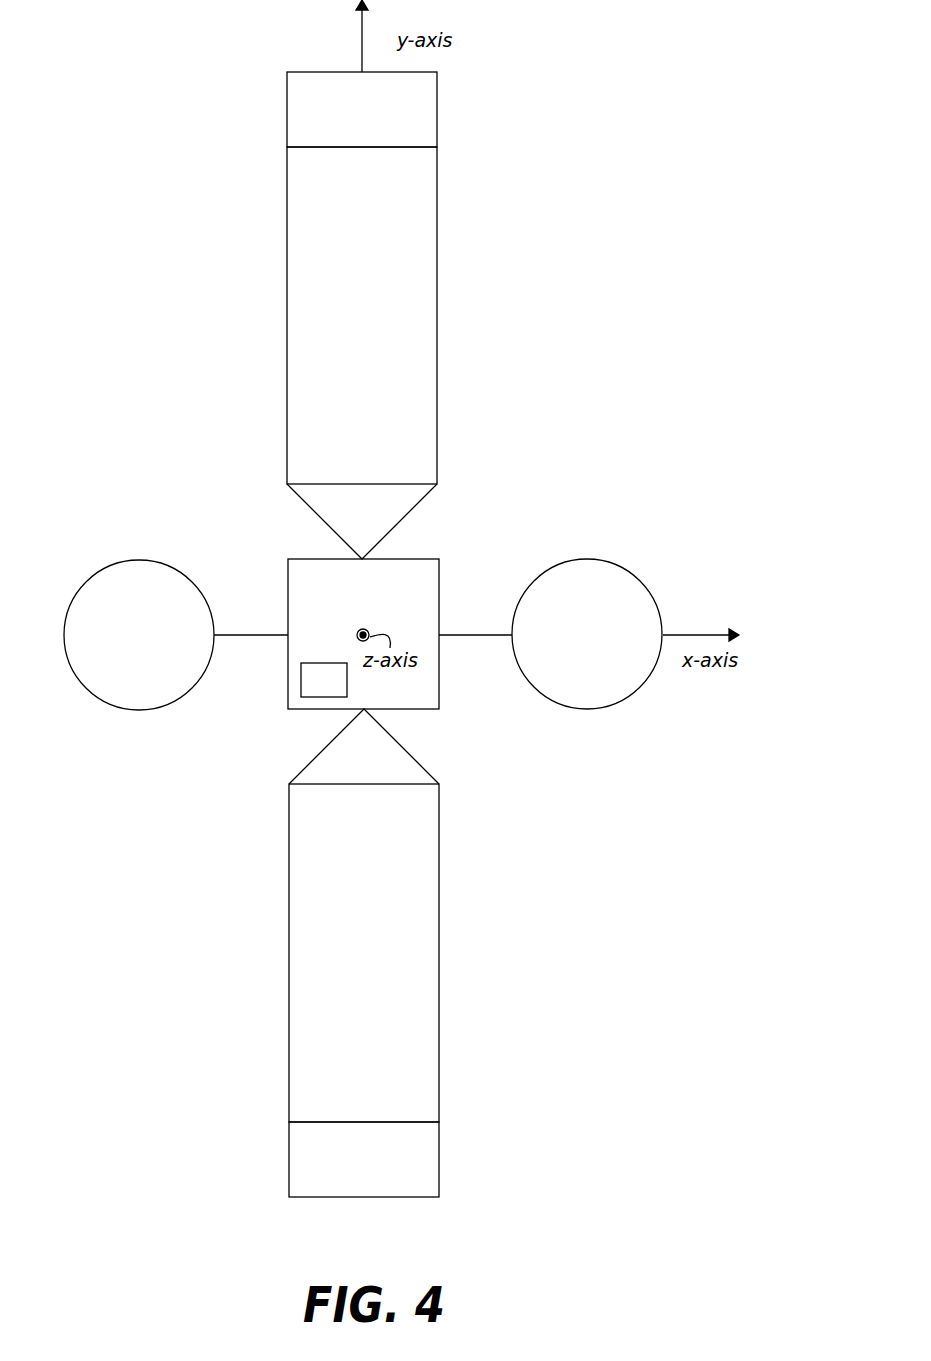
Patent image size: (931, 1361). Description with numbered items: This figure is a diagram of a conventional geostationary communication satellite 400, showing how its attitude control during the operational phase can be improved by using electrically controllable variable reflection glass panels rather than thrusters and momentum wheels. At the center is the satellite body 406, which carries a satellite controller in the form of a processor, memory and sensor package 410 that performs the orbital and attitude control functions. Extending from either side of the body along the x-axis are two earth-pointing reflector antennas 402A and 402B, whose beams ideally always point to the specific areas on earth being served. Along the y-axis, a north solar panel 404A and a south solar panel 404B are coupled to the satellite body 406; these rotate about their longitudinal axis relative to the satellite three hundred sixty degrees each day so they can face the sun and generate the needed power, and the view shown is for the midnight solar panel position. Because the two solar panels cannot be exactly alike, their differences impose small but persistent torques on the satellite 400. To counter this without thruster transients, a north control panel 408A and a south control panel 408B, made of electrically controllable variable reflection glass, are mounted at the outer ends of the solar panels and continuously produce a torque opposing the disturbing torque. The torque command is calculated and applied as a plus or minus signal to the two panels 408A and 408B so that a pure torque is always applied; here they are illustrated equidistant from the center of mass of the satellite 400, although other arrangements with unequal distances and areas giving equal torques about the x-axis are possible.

The geostationary communication satellite 400 is at (586, 356).
The earth-pointing reflector antenna 402A is at (152, 554).
The earth-pointing reflector antenna 402B is at (590, 553).
The north solar panel 404A is at (362, 353).
The south solar panel 404B is at (364, 915).
The satellite body 406 is at (363, 634).
The north electrically controllable variable reflection glass control panel 408A is at (439, 113).
The south electrically controllable variable reflection glass control panel 408B is at (455, 1148).
The processor, memory and sensor package 410 is at (313, 680).